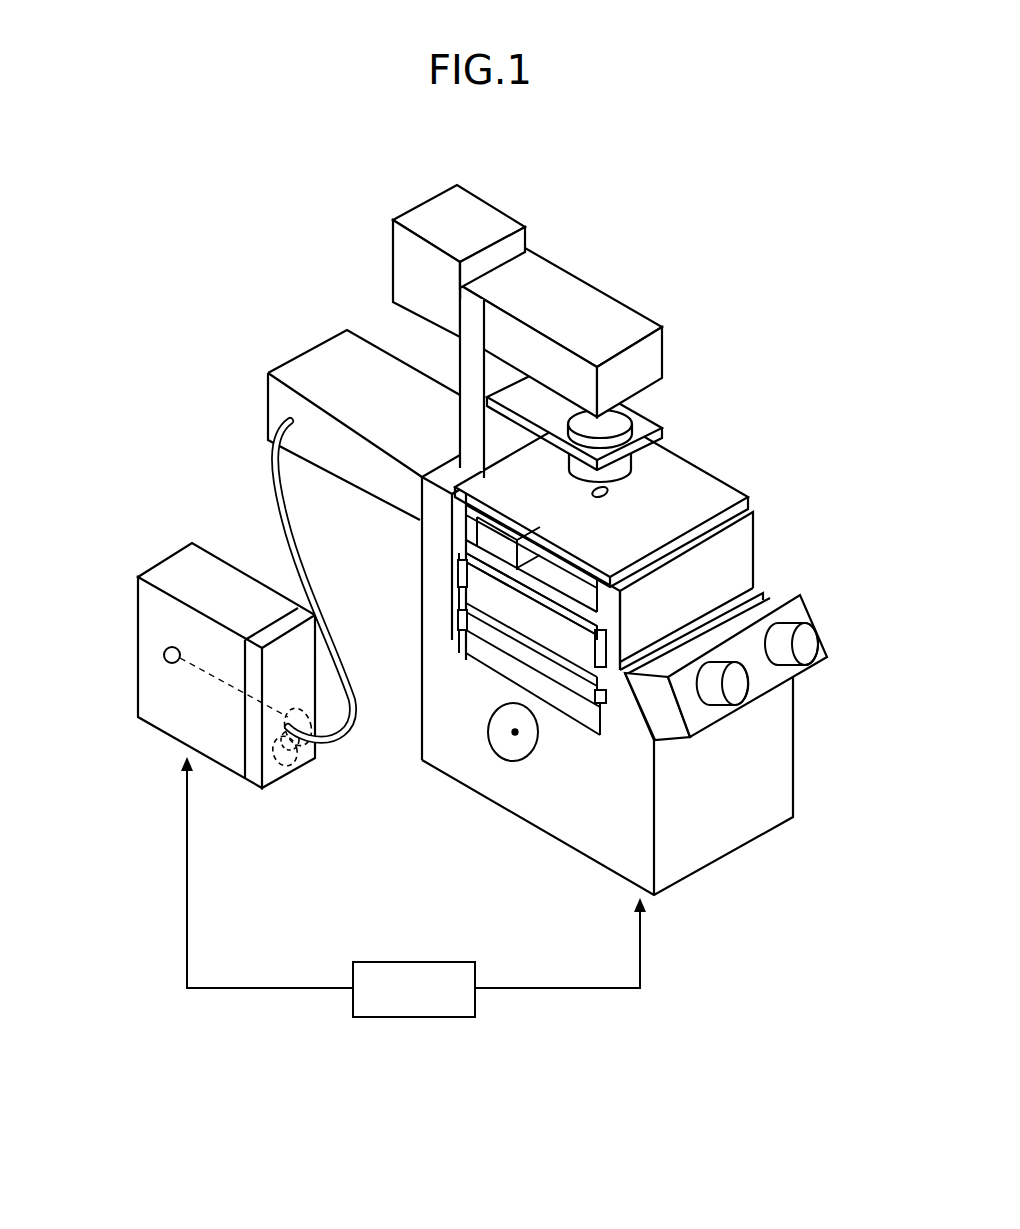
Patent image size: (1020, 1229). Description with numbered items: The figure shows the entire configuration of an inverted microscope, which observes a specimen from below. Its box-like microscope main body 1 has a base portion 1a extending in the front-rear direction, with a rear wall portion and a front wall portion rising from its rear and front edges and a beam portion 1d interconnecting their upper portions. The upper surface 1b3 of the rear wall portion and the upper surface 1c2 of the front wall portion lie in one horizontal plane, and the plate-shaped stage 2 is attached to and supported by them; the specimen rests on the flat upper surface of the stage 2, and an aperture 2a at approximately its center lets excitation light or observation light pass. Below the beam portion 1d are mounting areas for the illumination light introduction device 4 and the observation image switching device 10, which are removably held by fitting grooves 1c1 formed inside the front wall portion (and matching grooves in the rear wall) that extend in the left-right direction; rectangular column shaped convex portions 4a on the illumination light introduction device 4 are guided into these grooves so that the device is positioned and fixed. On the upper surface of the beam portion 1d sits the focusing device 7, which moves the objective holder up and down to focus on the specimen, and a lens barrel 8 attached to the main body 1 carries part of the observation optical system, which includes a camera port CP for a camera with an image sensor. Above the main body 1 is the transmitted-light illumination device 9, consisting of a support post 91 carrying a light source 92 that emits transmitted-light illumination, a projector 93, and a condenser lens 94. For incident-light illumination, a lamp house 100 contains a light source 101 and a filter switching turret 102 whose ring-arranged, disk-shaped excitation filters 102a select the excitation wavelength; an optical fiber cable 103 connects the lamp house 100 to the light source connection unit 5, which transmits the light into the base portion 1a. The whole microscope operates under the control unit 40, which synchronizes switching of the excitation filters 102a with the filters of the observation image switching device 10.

The microscope main body 1 is at (802, 758).
The base portion 1a is at (607, 853).
The upper surface of the rear wall portion 1b3 is at (453, 468).
The fitting grooves 1c1 is at (597, 640).
The upper surface of the front wall portion 1c2 is at (683, 548).
The beam portion 1d is at (555, 595).
The stage 2 is at (712, 487).
The aperture (transmission hole) 2a is at (604, 497).
The illumination light introduction device 4 is at (580, 638).
The convex portions 4a is at (460, 567).
The light source connection unit 5 is at (280, 412).
The focusing device 7 is at (497, 537).
The lens barrel 8 is at (708, 717).
The transmitted-light illumination device 9 is at (508, 307).
The support post 91 is at (470, 370).
The light source 92 is at (488, 213).
The projector 93 is at (610, 315).
The condenser lens 94 is at (627, 418).
The observation image switching device 10 is at (488, 660).
The control unit 40 is at (413, 1017).
The lamp house 100 is at (200, 530).
The light source 101 is at (164, 655).
The filter switching turret 102 is at (278, 783).
The excitation filters 102a is at (302, 763).
The optical fiber cable 103 is at (352, 727).
The camera port CP is at (515, 734).